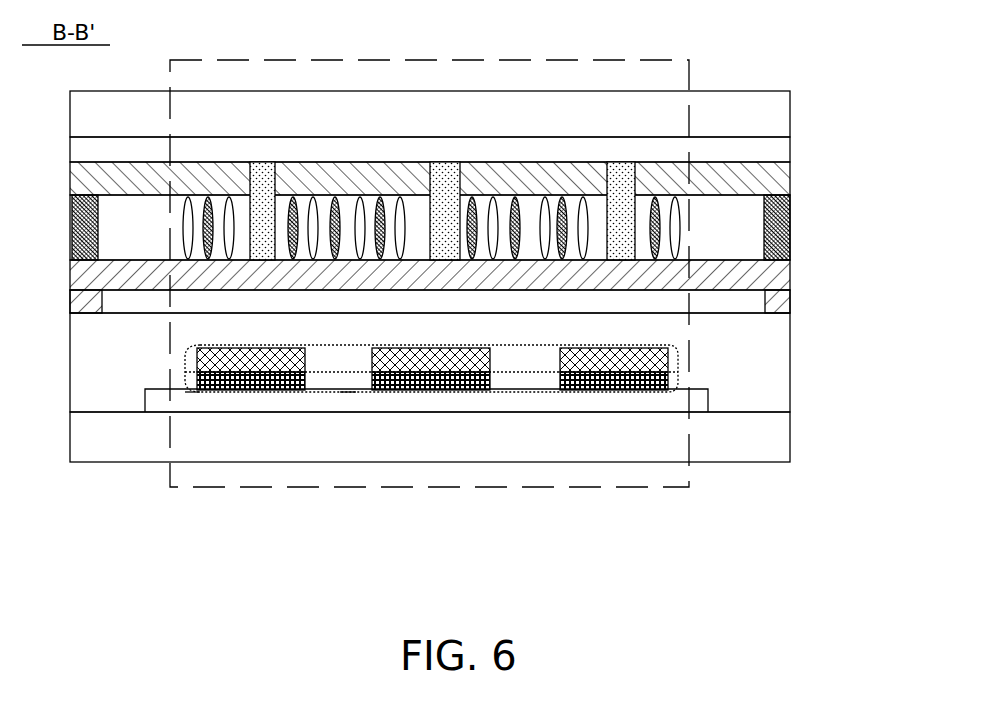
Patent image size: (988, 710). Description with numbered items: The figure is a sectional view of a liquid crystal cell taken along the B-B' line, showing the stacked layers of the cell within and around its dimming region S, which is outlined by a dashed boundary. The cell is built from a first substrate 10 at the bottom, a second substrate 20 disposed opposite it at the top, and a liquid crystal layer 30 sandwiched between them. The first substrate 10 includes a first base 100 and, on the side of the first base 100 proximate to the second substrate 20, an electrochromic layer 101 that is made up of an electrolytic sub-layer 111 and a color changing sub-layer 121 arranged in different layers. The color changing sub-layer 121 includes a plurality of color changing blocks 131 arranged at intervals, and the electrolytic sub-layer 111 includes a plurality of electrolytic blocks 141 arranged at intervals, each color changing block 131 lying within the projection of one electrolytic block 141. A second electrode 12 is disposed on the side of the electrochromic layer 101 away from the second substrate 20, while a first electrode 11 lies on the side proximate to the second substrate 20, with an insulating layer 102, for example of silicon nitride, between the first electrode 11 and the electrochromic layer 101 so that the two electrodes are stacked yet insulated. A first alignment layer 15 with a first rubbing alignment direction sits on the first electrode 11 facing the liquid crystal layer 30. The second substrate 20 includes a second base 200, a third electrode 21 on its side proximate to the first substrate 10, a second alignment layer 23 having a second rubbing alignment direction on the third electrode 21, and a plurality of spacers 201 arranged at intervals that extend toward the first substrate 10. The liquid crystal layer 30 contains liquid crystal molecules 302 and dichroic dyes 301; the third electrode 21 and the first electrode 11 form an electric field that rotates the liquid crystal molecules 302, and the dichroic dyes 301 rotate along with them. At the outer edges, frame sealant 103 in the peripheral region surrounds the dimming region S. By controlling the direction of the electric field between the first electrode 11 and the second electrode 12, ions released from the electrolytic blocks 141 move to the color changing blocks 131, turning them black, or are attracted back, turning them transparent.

The dimming region S is at (678, 58).
The first substrate 10 is at (462, 416).
The second substrate 20 is at (444, 146).
The liquid crystal layer 30 is at (446, 141).
The first base 100 is at (755, 447).
The electrochromic layer 101 is at (551, 360).
The insulating layer 102 is at (765, 338).
The frame sealant 103 is at (791, 240).
The first electrode 11 is at (740, 305).
The electrolytic sub-layer 111 is at (187, 392).
The second electrode 12 is at (672, 403).
The color changing sub-layer 121 is at (348, 392).
The color changing blocks 131 is at (678, 374).
The electrolytic blocks 141 is at (678, 353).
The first alignment layer 15 is at (752, 282).
The second base 200 is at (783, 121).
The spacers 201 is at (630, 186).
The third electrode 21 is at (778, 151).
The second alignment layer 23 is at (762, 193).
The dichroic dyes 301 is at (463, 197).
The liquid crystal molecules 302 is at (541, 215).